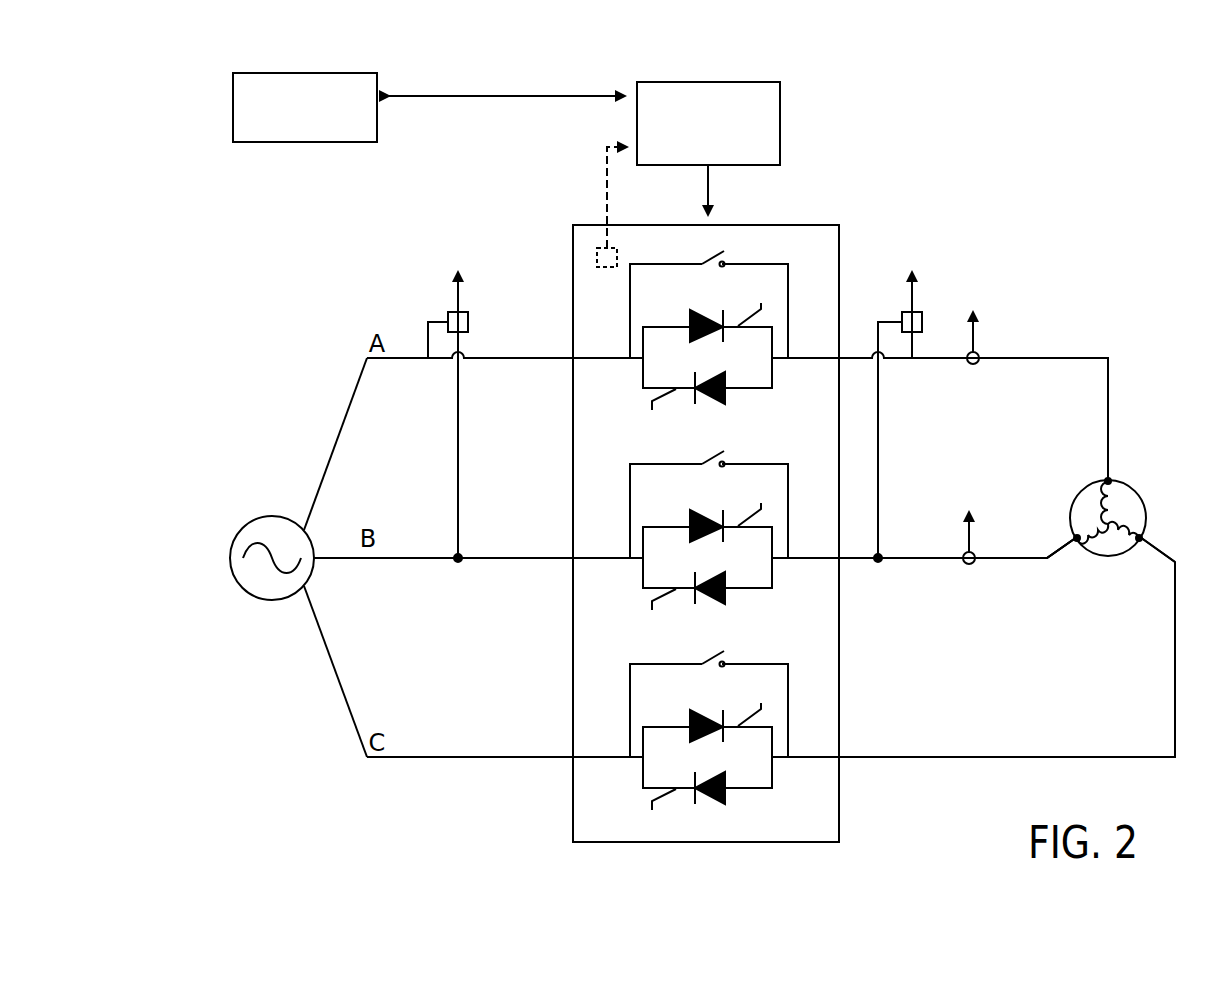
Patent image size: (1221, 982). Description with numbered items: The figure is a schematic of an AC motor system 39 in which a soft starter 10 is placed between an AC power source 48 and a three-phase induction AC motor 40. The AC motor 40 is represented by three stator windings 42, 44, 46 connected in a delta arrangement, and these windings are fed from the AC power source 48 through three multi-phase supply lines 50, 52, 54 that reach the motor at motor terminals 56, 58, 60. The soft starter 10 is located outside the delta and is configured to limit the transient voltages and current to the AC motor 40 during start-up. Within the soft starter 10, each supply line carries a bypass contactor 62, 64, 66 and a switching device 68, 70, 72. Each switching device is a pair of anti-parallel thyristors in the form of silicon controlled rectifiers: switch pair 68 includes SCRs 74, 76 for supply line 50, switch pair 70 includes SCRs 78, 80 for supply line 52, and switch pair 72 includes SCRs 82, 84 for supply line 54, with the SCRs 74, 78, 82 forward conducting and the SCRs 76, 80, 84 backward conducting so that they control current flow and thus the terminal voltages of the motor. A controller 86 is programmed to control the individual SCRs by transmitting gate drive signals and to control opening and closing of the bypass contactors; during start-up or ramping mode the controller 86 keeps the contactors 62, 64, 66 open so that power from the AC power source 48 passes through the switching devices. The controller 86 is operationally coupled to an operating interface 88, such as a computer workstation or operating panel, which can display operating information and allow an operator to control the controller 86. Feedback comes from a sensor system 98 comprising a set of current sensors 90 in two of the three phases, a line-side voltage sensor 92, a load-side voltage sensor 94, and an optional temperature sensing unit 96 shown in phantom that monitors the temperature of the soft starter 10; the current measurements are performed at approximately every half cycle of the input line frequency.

The AC motor system 39 is at (152, 152).
The operating interface 88 is at (268, 145).
The controller 86 is at (670, 166).
The soft starter 10 is at (573, 250).
The temperature sensing unit 96 is at (608, 270).
The AC power source 48 is at (258, 518).
The supply line 50 is at (1068, 358).
The supply line 52 is at (1005, 560).
The supply line 54 is at (975, 757).
The motor terminal 56 is at (1108, 442).
The motor terminal 58 is at (1062, 545).
The motor terminal 60 is at (1155, 553).
The AC motor 40 is at (1114, 500).
The stator winding 42 is at (1134, 497).
The stator winding 44 is at (1091, 494).
The stator winding 46 is at (1086, 496).
The line-side voltage sensor 92 is at (448, 318).
The load-side voltage sensor 94 is at (902, 318).
The current sensors 90 is at (980, 354).
The sensor system 98 is at (945, 273).
The bypass contactor 62 is at (720, 254).
The bypass contactor 64 is at (720, 454).
The bypass contactor 66 is at (720, 654).
The switching device 68 is at (731, 361).
The switching device 70 is at (731, 561).
The switching device 72 is at (731, 761).
The SCR 74 is at (692, 320).
The SCR 76 is at (728, 388).
The SCR 78 is at (692, 520).
The SCR 80 is at (728, 588).
The SCR 82 is at (692, 720).
The SCR 84 is at (728, 788).